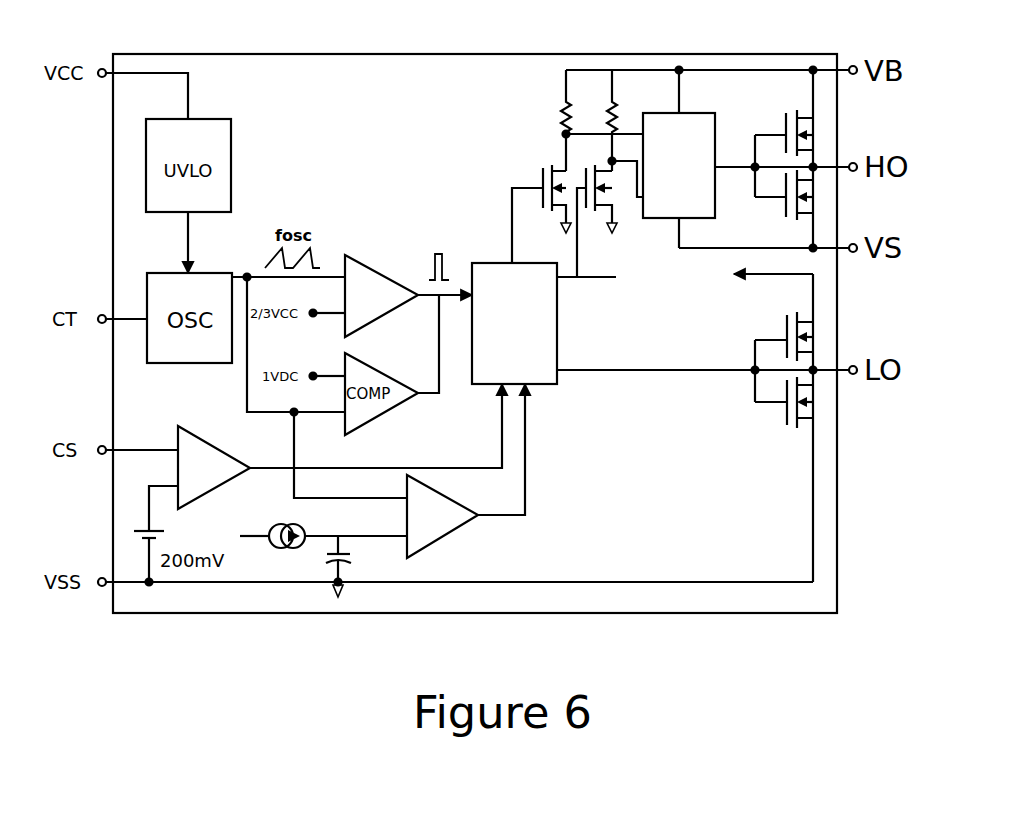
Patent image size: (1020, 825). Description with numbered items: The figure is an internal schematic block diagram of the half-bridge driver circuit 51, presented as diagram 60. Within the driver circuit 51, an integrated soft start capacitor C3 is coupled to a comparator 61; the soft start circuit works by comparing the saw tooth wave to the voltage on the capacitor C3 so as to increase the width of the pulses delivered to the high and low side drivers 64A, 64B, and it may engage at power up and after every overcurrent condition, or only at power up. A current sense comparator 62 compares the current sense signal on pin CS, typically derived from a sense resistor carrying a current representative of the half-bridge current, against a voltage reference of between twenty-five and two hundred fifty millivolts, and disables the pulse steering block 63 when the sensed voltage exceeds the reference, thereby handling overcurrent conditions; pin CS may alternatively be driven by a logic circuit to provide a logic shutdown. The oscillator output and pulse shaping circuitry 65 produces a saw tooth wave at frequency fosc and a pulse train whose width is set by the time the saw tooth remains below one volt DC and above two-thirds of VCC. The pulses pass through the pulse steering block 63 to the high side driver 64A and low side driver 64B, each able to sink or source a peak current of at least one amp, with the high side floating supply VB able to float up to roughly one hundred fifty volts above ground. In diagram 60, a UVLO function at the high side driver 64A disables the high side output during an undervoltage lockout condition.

The driver circuit 51 is at (510, 613).
The diagram 60 is at (362, 665).
The comparator 61 is at (466, 524).
The current sense comparator 62 is at (238, 476).
The pulse steering block 63 is at (557, 310).
The high side driver 64A is at (696, 159).
The low side driver 64B is at (703, 424).
The oscillator output and pulse shaping circuitry 65 is at (353, 230).
The soft start capacitor C3 is at (318, 566).